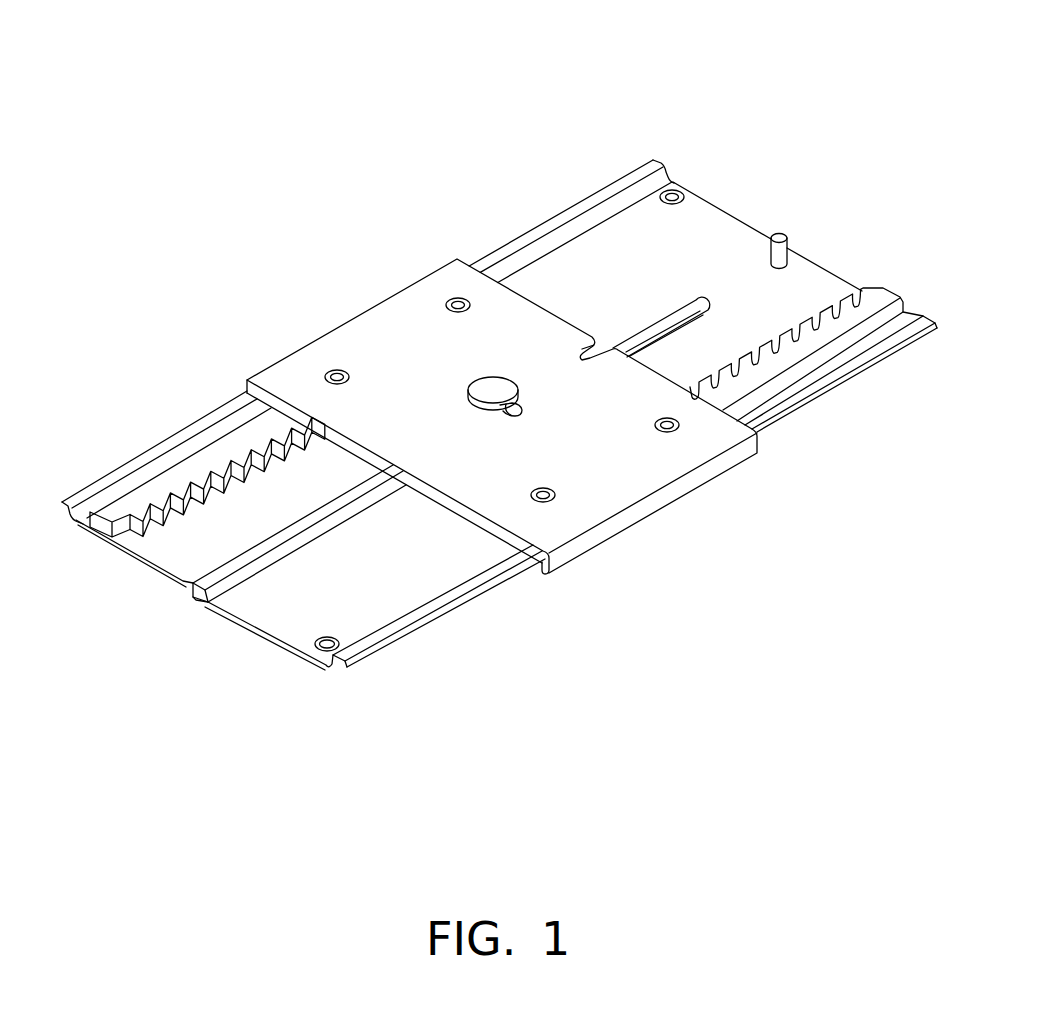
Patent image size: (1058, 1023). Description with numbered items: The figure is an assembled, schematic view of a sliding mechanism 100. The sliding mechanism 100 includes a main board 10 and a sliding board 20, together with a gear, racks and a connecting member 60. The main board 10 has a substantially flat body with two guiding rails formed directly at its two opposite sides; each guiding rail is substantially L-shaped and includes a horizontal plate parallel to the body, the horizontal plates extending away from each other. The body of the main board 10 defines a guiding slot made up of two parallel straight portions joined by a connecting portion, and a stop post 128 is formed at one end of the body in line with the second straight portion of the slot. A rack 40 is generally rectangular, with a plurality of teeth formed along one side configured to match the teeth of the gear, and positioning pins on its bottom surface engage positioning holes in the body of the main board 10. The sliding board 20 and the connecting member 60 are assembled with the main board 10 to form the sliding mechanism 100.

The sliding mechanism 100 is at (502, 50).
The main board 10 is at (717, 221).
The sliding board 20 is at (370, 318).
The rack 40 is at (867, 308).
The connecting member 60 is at (482, 385).
The stop post 128 is at (776, 243).